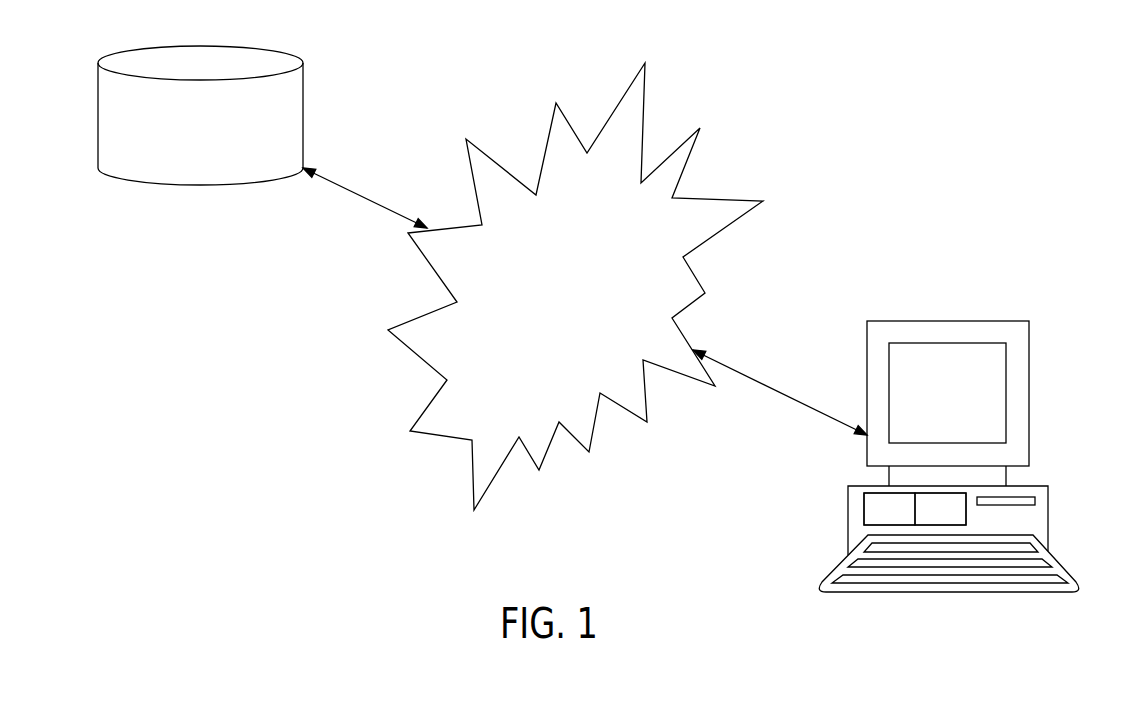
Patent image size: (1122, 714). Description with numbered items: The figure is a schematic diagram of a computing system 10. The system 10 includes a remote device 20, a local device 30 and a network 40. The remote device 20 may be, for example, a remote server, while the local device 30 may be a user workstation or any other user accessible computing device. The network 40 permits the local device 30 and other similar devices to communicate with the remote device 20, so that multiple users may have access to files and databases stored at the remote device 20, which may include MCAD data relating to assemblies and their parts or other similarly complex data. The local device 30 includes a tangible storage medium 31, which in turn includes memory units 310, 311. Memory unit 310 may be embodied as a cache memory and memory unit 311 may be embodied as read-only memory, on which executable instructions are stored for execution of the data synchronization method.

The computing system 10 is at (800, 90).
The remote device 20 is at (210, 141).
The network 40 is at (581, 285).
The local device 30 is at (845, 531).
The tangible storage medium 31 is at (864, 511).
The memory unit 310 is at (904, 521).
The memory unit 311 is at (958, 521).